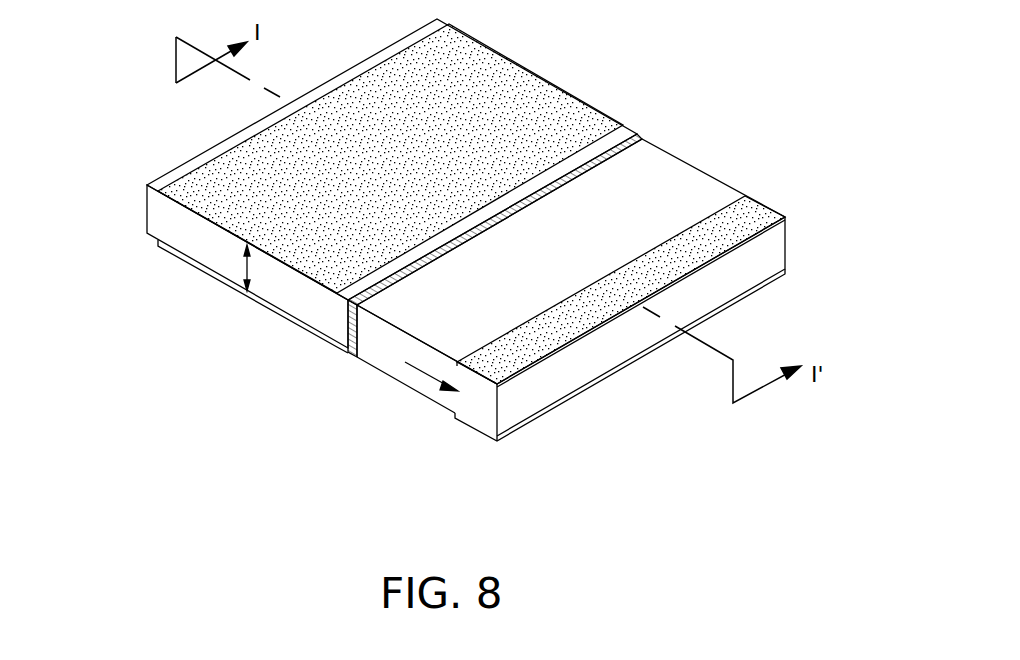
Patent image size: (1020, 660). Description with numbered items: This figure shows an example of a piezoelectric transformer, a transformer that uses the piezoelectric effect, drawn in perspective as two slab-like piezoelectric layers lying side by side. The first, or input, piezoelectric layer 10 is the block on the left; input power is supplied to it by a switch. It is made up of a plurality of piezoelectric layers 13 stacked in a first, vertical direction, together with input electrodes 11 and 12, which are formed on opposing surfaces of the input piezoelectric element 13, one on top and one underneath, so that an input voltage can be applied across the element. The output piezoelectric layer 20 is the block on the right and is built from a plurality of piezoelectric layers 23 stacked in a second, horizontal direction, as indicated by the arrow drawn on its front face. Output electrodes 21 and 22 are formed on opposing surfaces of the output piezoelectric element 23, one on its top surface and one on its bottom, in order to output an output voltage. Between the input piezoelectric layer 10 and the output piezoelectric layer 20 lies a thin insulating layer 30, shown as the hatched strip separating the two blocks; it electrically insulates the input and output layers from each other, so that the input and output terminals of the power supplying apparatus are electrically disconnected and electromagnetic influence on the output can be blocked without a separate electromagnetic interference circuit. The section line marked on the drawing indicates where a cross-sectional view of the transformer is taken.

The input piezoelectric layer 10 is at (365, 220).
The input electrode 11 is at (302, 257).
The input electrode 12 is at (208, 274).
The input piezoelectric element 13 is at (185, 242).
The output piezoelectric layer 20 is at (534, 326).
The output electrode 21 is at (520, 354).
The output electrode 22 is at (468, 428).
The output piezoelectric element 23 is at (390, 357).
The insulating layer 30 is at (637, 136).